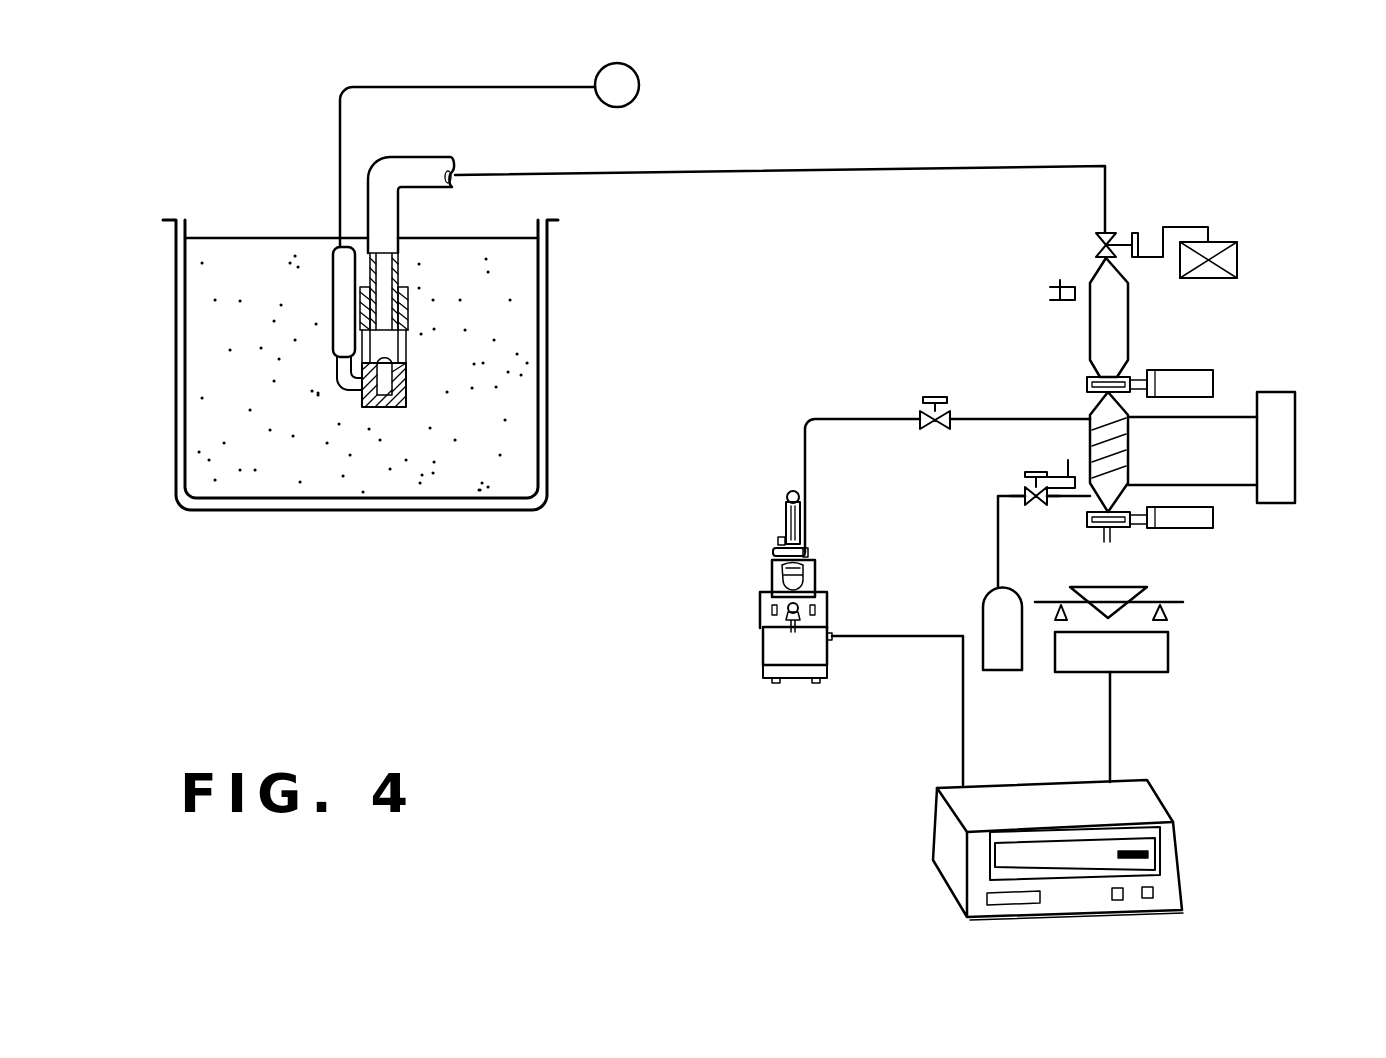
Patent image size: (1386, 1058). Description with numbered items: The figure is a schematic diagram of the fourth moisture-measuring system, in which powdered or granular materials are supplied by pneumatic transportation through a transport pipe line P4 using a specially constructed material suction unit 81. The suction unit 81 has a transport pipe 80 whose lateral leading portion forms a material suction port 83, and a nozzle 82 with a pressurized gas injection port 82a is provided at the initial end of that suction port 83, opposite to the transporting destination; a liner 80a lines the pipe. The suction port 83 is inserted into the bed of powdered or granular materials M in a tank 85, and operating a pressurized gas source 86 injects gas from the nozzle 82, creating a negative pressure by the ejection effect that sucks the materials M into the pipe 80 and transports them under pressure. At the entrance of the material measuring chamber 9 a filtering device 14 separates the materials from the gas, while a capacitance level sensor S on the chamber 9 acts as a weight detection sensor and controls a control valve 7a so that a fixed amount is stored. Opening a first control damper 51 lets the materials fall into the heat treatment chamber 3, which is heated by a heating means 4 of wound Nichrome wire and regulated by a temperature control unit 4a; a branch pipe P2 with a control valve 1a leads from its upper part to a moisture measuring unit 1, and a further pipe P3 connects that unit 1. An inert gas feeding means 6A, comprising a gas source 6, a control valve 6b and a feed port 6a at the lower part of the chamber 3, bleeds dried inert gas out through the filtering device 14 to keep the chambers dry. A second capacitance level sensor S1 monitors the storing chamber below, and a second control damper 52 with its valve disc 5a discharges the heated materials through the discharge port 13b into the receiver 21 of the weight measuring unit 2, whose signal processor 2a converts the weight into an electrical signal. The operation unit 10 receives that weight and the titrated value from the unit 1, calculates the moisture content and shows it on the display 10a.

The moisture measuring unit 1 is at (808, 580).
The control valve 1a is at (918, 410).
The weight measuring unit 2 is at (1153, 669).
The signal processor 2a is at (1168, 651).
The receiver 21 is at (1103, 598).
The heat treatment chamber 3 is at (1095, 405).
The heating means 4 is at (1128, 442).
The temperature control unit 4a is at (1297, 447).
The valve disc 5a is at (1120, 527).
The first control damper 51 is at (1197, 364).
The second control damper 52 is at (1205, 528).
The gas source 6 is at (1000, 612).
The inert gas feeding means 6A is at (986, 524).
The inert gas feed port 6a is at (1045, 505).
The control valve 6b is at (1027, 507).
The control valve 7a is at (1108, 233).
The material measuring chamber 9 is at (1118, 333).
The operation unit 10 is at (1084, 822).
The display 10a is at (1110, 853).
The material discharge port 13b is at (1099, 551).
The filtering device 14 is at (1238, 258).
The transport pipe 80 is at (393, 211).
The pipe liner 80a is at (380, 268).
The material suction unit 81 is at (318, 208).
The nozzle 82 is at (408, 385).
The pressurized gas injection port 82a is at (402, 352).
The material suction port 83 is at (333, 370).
The tank 85 is at (548, 412).
The pressurized gas source 86 is at (625, 78).
The powdered or granular materials M is at (520, 318).
The capacitance level sensor S is at (1053, 287).
The capacitance level sensor S1 is at (1056, 462).
The branch pipe P2 is at (1002, 419).
The pipe P3 is at (830, 418).
The transport pipe line P4 is at (948, 164).